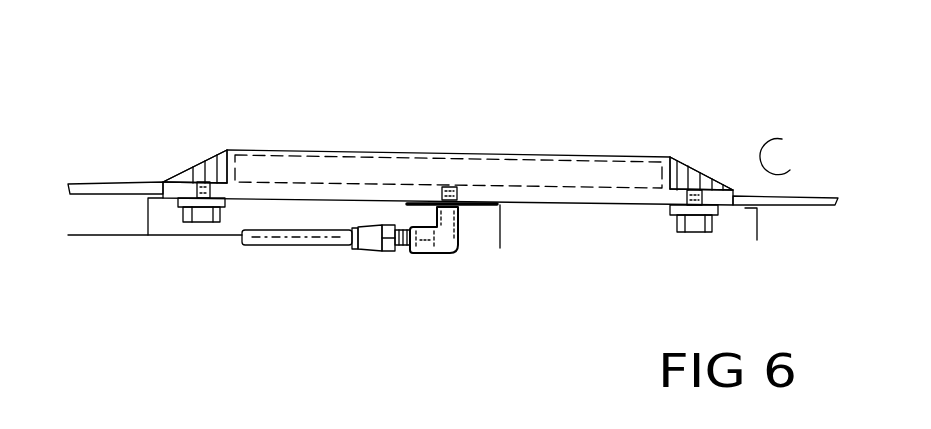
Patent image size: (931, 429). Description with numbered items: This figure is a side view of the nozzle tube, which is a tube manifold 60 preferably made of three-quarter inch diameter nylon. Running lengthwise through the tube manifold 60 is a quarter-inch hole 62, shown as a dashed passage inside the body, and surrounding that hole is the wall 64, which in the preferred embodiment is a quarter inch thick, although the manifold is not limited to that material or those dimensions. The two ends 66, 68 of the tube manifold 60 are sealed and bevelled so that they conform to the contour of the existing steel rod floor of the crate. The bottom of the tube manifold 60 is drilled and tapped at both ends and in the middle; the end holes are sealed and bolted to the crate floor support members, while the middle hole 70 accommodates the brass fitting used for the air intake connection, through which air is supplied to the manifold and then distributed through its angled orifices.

The tube manifold 60 is at (822, 153).
The hole 62 is at (448, 107).
The wall 64 is at (448, 126).
The end 66 is at (137, 115).
The end 68 is at (752, 127).
The middle hole 70 is at (524, 127).